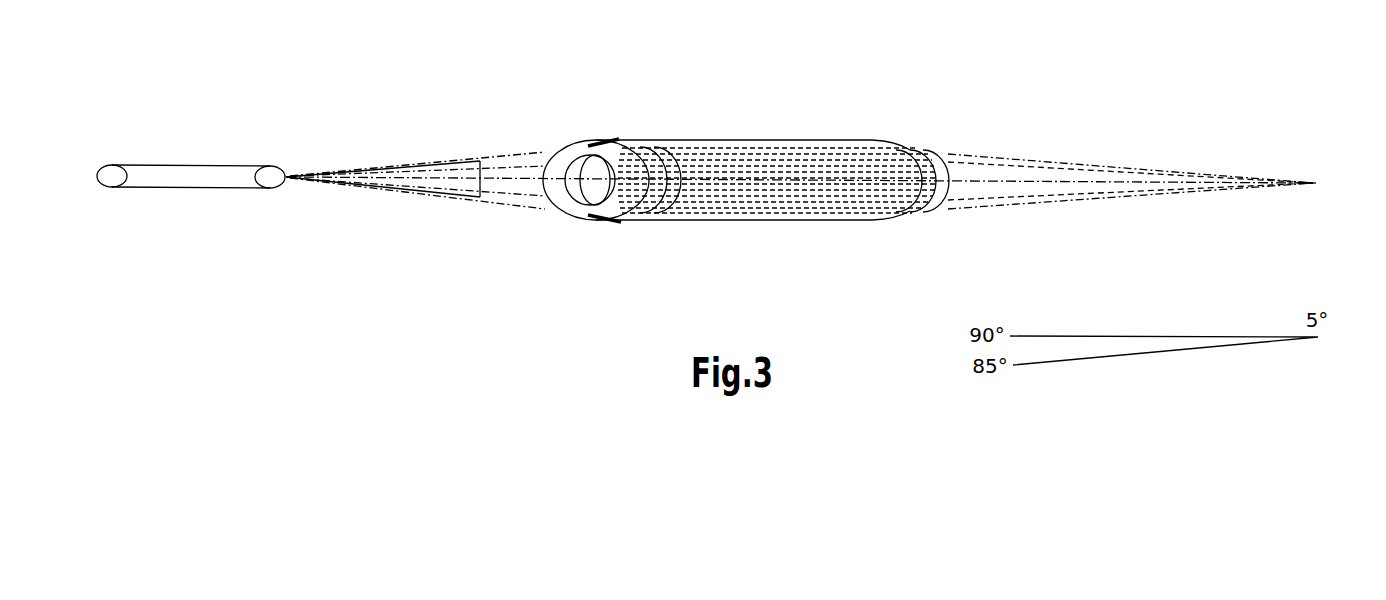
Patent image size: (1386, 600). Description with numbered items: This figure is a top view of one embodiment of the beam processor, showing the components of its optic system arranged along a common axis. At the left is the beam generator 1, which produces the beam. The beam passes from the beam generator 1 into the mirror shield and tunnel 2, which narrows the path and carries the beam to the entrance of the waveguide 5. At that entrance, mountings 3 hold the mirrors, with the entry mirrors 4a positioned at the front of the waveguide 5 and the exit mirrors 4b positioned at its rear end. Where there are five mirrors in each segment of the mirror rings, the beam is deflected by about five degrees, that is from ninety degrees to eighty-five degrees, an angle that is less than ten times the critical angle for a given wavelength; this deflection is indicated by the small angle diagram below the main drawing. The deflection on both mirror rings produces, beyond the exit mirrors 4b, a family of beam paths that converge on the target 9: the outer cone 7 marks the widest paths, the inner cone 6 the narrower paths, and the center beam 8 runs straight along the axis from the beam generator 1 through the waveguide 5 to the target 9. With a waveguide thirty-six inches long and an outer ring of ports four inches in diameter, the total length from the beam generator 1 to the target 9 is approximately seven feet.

The beam generator 1 is at (185, 172).
The mirror shield and tunnel 2 is at (407, 188).
The mountings 3 is at (606, 141).
The entry mirrors 4a is at (608, 217).
The exit mirrors 4b is at (954, 214).
The waveguide 5 is at (774, 139).
The inner cone 6 is at (1037, 157).
The outer cone 7 is at (976, 153).
The center beam 8 is at (1021, 186).
The target 9 is at (1314, 180).